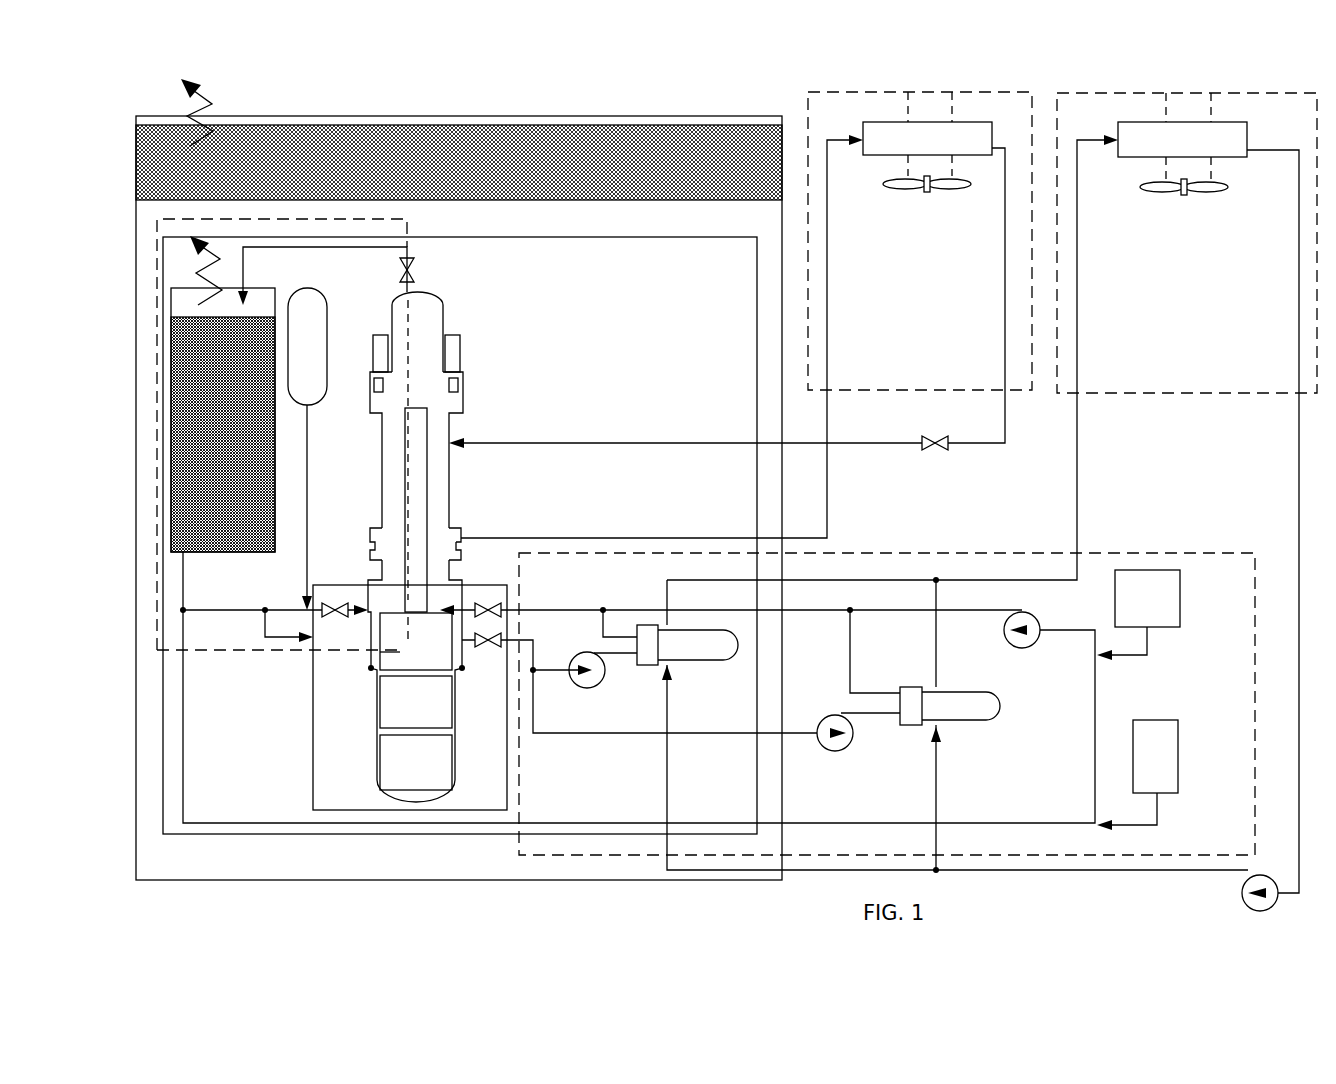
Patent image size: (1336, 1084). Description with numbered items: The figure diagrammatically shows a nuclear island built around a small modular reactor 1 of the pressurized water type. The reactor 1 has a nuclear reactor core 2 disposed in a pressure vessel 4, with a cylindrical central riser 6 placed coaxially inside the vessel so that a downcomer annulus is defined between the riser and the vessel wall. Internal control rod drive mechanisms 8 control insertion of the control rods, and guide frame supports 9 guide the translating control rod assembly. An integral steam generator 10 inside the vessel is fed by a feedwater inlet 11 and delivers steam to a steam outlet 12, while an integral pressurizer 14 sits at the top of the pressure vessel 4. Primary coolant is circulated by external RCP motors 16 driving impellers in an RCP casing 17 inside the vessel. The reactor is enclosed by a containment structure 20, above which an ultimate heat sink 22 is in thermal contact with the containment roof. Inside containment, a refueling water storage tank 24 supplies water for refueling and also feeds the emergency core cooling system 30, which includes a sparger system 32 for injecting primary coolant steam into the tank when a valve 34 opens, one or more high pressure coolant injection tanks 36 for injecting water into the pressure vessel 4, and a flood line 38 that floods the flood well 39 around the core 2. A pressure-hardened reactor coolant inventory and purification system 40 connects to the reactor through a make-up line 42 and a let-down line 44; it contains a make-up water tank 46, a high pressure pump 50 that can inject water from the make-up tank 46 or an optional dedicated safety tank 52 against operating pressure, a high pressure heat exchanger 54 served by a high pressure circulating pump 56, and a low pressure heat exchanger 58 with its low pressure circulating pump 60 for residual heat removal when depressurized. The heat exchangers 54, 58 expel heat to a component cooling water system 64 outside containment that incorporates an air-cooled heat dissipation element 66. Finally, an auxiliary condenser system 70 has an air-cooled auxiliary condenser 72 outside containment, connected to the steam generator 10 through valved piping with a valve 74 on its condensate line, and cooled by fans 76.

The small modular reactor 1 is at (449, 547).
The nuclear reactor core 2 is at (420, 776).
The pressure vessel 4 is at (452, 455).
The central riser 6 is at (430, 482).
The internal control rod drive mechanisms 8 is at (420, 655).
The guide frame supports 9 is at (420, 696).
The steam generator 10 is at (392, 540).
The feedwater inlet 11 is at (462, 555).
The steam outlet 12 is at (462, 534).
The integral pressurizer 14 is at (425, 312).
The external RCP motors 16 is at (462, 352).
The RCP casing 17 is at (461, 388).
The containment structure 20 is at (135, 370).
The ultimate heat sink 22 is at (484, 174).
The refueling water storage tank 24 is at (230, 419).
The emergency core cooling system 30 is at (205, 652).
The sparger system 32 is at (315, 249).
The valve 34 is at (414, 272).
The high pressure coolant injection tank 36 is at (307, 320).
The flood line 38 is at (265, 630).
The flood well 39 is at (313, 782).
The reactor coolant inventory and purification system 40 is at (1155, 556).
The make-up line 42 is at (570, 611).
The let-down line 44 is at (535, 680).
The make-up water tank 46 is at (1166, 761).
The high pressure pump 50 is at (1034, 646).
The dedicated safety tank 52 is at (1161, 615).
The high pressure heat exchanger 54 is at (698, 663).
The high pressure circulating pump 56 is at (594, 672).
The low pressure heat exchanger 58 is at (1002, 705).
The low pressure circulating pump 60 is at (852, 735).
The component cooling water system 64 is at (1185, 395).
The heat dissipation element 66 is at (1122, 158).
The auxiliary condenser system 70 is at (850, 392).
The auxiliary condenser 72 is at (868, 156).
The valve 74 is at (944, 450).
The fans 76 is at (943, 190).